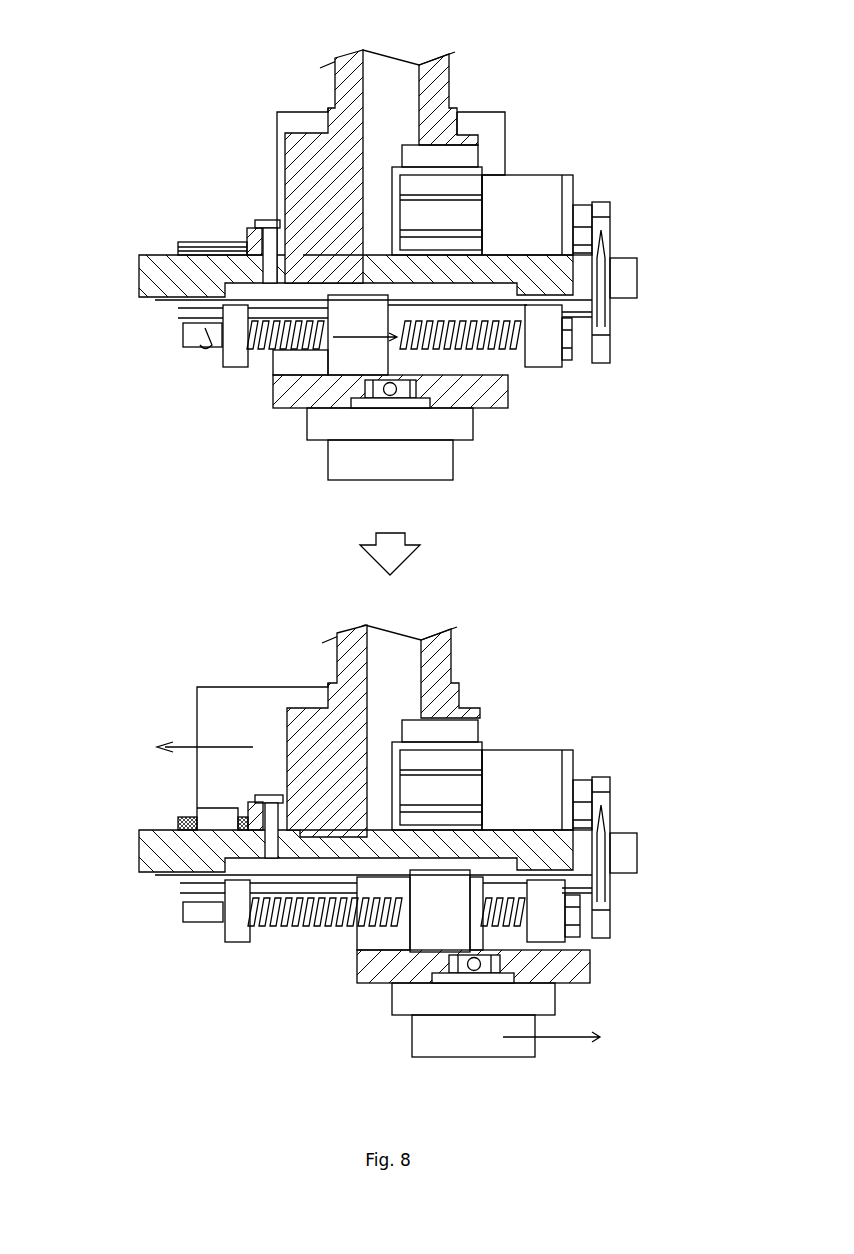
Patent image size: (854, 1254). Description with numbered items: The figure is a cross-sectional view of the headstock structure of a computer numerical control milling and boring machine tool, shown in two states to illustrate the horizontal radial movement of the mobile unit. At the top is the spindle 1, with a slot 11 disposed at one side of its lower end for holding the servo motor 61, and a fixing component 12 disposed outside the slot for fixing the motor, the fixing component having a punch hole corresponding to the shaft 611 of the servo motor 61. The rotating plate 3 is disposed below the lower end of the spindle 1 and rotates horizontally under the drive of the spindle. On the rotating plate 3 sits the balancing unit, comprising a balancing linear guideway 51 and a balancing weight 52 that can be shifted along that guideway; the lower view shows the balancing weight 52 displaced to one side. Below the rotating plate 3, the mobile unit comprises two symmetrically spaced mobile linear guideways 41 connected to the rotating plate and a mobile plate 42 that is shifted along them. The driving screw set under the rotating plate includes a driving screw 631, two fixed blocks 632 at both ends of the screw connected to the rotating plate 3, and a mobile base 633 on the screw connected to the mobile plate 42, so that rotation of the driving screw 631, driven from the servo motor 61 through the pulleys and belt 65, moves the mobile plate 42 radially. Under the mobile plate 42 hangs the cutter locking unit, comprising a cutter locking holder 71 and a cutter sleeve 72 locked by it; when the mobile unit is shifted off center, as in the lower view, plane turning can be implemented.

The spindle 1 is at (448, 82).
The rotating plate 3 is at (139, 275).
The slot 11 is at (468, 150).
The fixing component 12 is at (538, 187).
The mobile linear guideway 41 is at (178, 308).
The mobile plate 42 is at (270, 395).
The balancing linear guideway 51 is at (197, 243).
The balancing weight 52 is at (302, 110).
The servo motor 61 is at (467, 190).
The belt 65 is at (610, 330).
The cutter locking holder 71 is at (413, 400).
The cutter sleeve 72 is at (452, 460).
The shaft 611 is at (583, 215).
The driving screw 631 is at (195, 337).
The fixed block 632 is at (237, 360).
The mobile base 633 is at (312, 372).